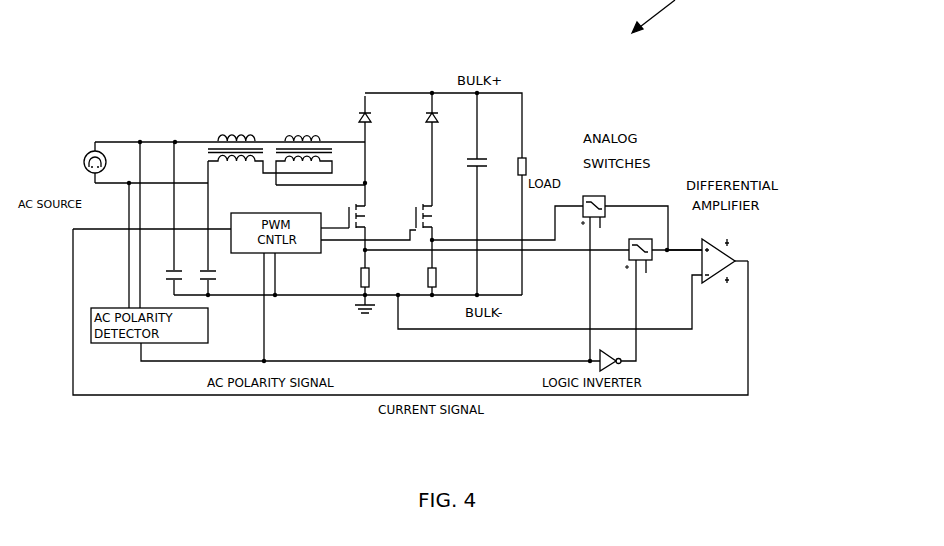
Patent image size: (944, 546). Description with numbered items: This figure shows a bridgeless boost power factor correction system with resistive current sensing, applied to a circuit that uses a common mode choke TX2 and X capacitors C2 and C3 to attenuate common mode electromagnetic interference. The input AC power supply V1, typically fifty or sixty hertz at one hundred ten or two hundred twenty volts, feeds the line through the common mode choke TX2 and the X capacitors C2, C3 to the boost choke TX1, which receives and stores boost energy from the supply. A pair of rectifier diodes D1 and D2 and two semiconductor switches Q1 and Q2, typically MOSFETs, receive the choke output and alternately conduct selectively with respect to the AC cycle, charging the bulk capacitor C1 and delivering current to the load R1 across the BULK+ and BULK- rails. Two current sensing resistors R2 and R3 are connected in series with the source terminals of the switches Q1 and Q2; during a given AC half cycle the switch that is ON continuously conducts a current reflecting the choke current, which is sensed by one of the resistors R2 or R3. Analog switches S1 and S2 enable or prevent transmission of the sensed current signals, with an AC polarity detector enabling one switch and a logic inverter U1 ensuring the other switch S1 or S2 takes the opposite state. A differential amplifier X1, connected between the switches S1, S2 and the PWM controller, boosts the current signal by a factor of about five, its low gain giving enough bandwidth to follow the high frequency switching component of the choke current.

The input AC power supply V1 is at (85, 162).
The boost choke TX1 is at (320, 151).
The common mode choke TX2 is at (242, 145).
The rectifier diode D1 is at (381, 121).
The rectifier diode D2 is at (447, 120).
The bulk capacitor C1 is at (490, 164).
The load R1 is at (536, 165).
The semiconductor switch Q1 is at (345, 215).
The semiconductor switch Q2 is at (410, 216).
The current sensing resistor R2 is at (353, 278).
The current sensing resistor R3 is at (419, 278).
The X capacitor C2 is at (201, 263).
The X capacitor C3 is at (167, 263).
The analog switch S1 is at (596, 202).
The analog switch S2 is at (638, 245).
The differential amplifier X1 is at (718, 253).
The logic inverter U1 is at (610, 353).